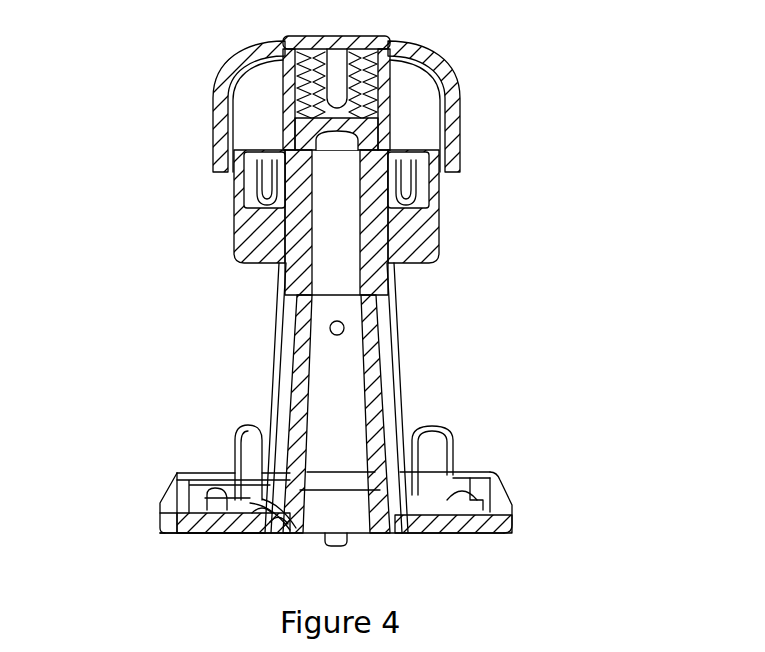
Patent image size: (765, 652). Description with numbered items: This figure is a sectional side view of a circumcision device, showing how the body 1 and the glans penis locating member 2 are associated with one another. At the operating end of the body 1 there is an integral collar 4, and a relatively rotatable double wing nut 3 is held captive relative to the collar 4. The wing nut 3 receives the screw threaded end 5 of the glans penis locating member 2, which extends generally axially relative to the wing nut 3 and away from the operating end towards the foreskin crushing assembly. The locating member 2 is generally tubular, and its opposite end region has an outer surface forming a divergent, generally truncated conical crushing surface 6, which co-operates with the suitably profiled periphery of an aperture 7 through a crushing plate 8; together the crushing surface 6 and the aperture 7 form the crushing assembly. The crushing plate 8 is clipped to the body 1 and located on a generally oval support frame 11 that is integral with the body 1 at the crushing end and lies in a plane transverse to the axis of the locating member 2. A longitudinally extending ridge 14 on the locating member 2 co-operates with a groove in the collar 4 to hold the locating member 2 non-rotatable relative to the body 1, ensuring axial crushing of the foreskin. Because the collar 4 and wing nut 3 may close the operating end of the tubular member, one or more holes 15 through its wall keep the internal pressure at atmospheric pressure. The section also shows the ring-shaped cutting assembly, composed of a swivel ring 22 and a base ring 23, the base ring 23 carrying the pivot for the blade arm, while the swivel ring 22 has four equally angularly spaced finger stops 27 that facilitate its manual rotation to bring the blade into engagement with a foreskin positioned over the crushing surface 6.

The body 1 is at (385, 330).
The glans penis locating member 2 is at (355, 497).
The double wing nut 3 is at (450, 60).
The collar 4 is at (440, 212).
The screw threaded end 5 is at (392, 88).
The crushing surface 6 is at (262, 512).
The aperture 7 is at (278, 518).
The crushing plate 8 is at (212, 520).
The support frame 11 is at (165, 528).
The ridge 14 is at (428, 238).
The holes 15 is at (329, 328).
The swivel ring 22 is at (175, 474).
The base ring 23 is at (162, 506).
The finger stops 27 is at (453, 437).